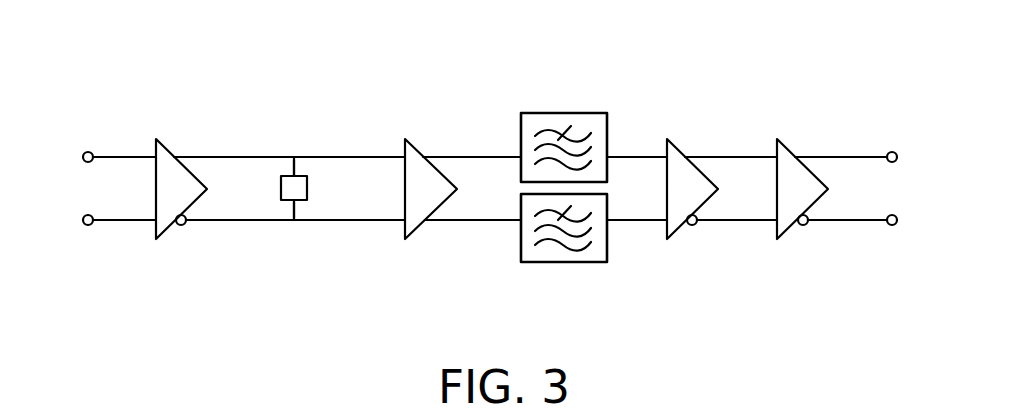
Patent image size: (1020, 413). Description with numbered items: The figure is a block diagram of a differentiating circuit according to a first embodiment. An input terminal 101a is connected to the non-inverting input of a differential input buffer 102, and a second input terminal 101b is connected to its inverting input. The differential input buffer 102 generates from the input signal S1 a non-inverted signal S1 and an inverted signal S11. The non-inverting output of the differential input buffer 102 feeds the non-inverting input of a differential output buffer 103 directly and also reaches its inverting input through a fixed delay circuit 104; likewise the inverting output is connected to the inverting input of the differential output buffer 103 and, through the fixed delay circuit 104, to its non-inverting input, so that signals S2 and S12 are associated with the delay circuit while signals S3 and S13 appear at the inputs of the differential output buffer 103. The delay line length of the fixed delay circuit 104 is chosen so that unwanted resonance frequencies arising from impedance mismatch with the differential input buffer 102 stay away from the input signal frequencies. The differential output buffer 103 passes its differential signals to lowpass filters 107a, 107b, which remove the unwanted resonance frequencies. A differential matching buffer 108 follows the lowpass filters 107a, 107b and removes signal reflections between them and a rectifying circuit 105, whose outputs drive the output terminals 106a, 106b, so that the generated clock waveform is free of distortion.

The input terminal 101a is at (88, 152).
The input terminal 101b is at (89, 226).
The differential input buffer 102 is at (172, 152).
The differential output buffer 103 is at (432, 157).
The fixed delay circuit 104 is at (282, 184).
The rectifying circuit 105 is at (790, 150).
The output terminal 106a is at (893, 152).
The output terminal 106b is at (893, 226).
The lowpass filter 107a is at (553, 113).
The lowpass filter 107b is at (557, 262).
The differential matching buffer 108 is at (672, 142).
The input signal S1 is at (133, 146).
The delayed signal S2 is at (295, 165).
The output signal S3 is at (376, 157).
The inverted signal S11 is at (200, 225).
The inverted delayed signal S12 is at (295, 210).
The inverted output signal S13 is at (388, 222).